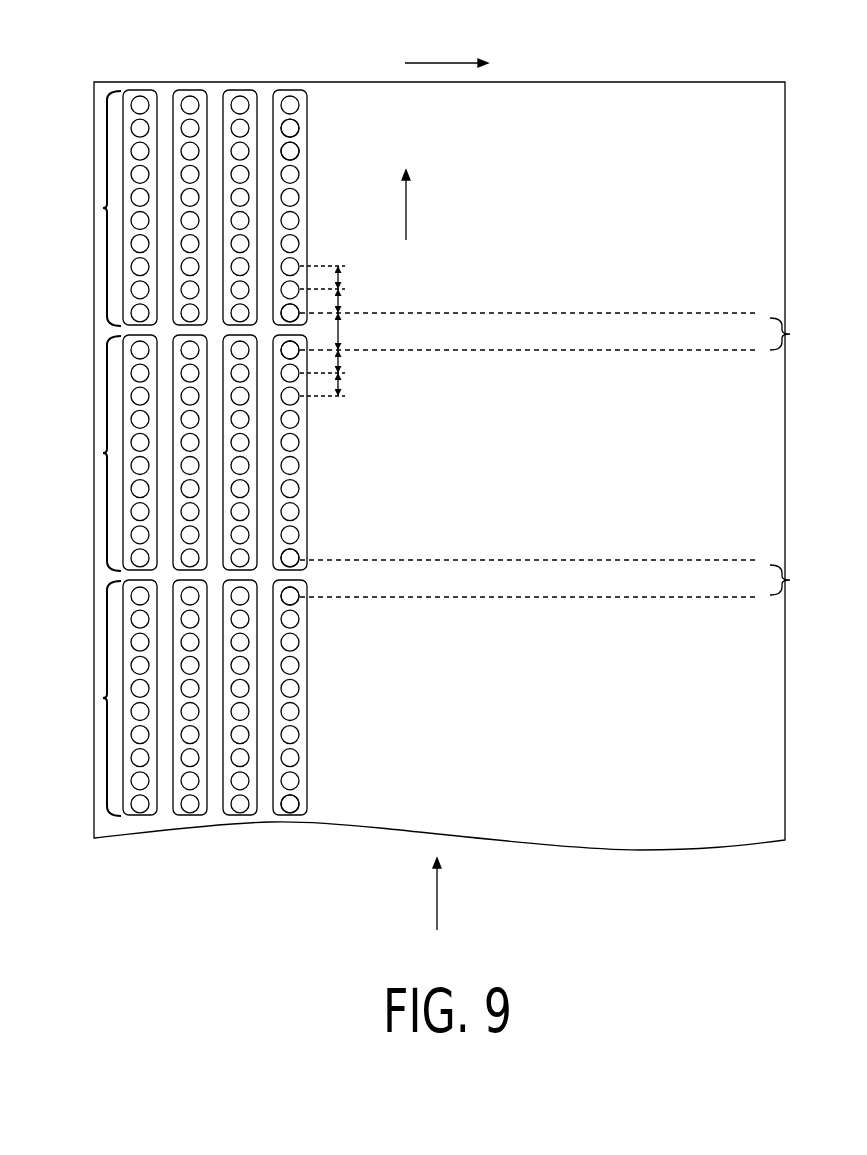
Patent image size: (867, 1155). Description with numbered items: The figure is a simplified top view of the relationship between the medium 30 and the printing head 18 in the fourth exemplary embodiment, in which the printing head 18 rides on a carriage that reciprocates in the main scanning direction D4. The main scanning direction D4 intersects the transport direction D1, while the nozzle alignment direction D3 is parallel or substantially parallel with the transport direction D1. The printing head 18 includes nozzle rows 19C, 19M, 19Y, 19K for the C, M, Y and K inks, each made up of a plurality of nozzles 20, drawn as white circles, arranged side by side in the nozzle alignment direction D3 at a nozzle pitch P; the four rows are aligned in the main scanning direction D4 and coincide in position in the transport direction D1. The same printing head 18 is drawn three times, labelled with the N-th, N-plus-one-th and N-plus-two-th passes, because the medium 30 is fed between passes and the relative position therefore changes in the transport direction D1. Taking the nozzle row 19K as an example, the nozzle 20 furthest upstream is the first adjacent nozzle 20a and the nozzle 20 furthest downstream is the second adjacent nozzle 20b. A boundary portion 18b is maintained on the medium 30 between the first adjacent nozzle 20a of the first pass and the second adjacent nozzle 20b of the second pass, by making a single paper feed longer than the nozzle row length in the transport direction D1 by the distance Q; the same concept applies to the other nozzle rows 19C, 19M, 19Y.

The printing head 18 is at (104, 209).
The boundary portion 18b is at (790, 334).
The nozzle row 19C is at (140, 89).
The nozzle row 19M is at (190, 89).
The nozzle row 19Y is at (242, 89).
The nozzle row 19K is at (290, 89).
The nozzle 20 is at (299, 127).
The first adjacent nozzle 20a is at (292, 311).
The second adjacent nozzle 20b is at (292, 353).
The medium 30 is at (615, 845).
The nozzle pitch P is at (328, 331).
The distance Q is at (350, 331).
The transport direction D1 is at (420, 894).
The nozzle alignment direction D3 is at (389, 205).
The main scanning direction D4 is at (446, 52).